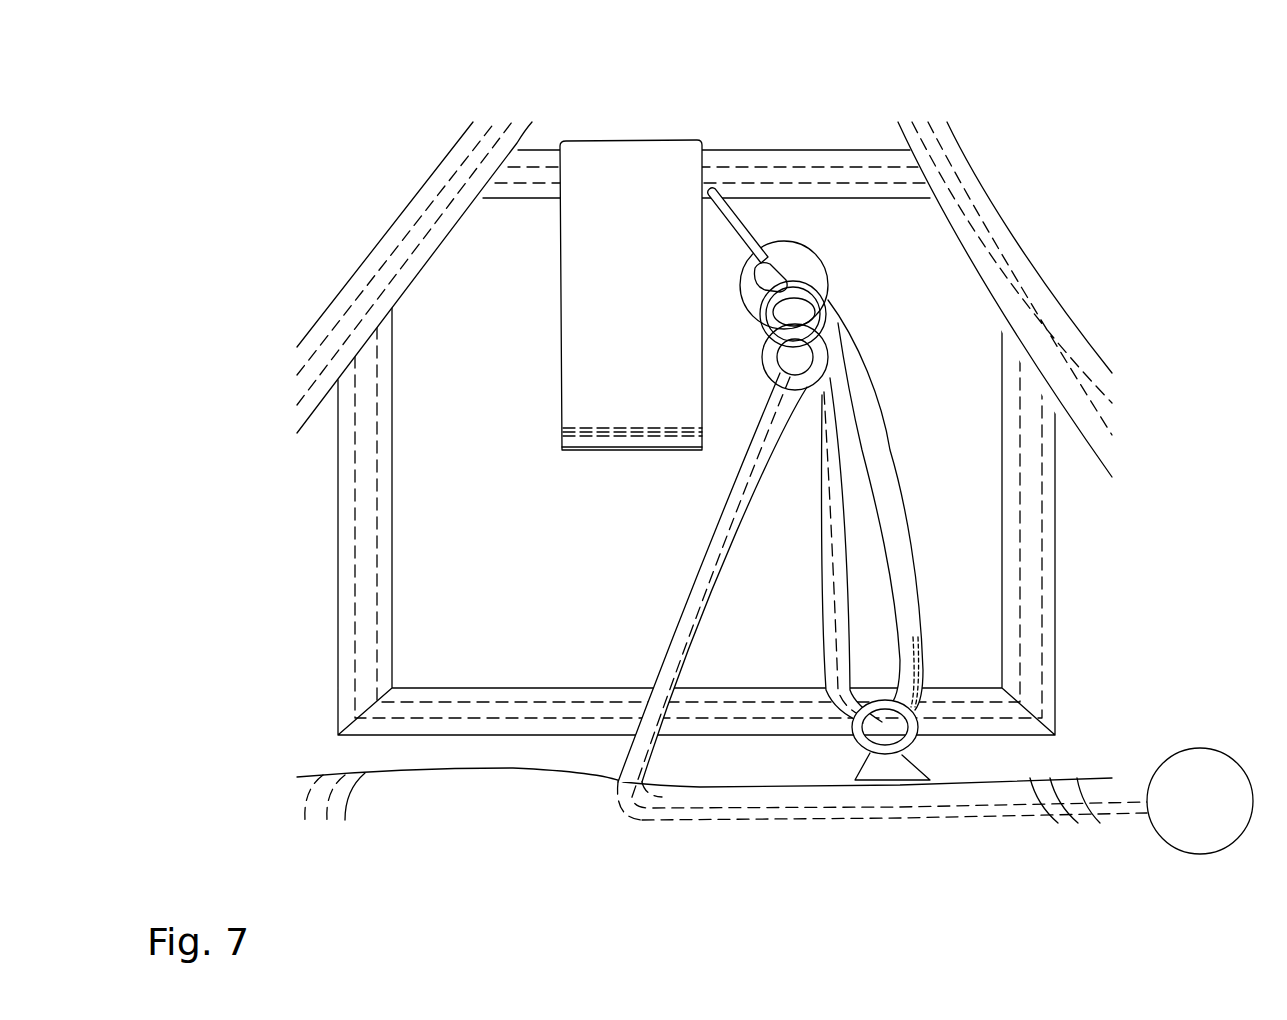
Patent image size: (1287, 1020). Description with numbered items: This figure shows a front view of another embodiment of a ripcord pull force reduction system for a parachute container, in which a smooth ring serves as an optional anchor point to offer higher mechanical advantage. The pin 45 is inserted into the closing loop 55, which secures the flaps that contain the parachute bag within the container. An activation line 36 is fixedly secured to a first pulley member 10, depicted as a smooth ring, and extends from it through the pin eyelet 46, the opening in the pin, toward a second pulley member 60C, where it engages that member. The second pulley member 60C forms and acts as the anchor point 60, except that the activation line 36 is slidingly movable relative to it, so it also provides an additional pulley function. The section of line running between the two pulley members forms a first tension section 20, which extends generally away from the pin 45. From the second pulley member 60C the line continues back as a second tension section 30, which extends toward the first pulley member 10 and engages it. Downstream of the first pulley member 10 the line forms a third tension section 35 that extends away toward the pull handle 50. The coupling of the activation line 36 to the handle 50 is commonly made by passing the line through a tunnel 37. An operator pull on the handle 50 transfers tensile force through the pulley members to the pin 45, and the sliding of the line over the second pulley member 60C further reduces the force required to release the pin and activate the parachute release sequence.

The first pulley member 10 is at (832, 350).
The first tension section 20 is at (907, 557).
The second tension section 30 is at (827, 512).
The third tension section 35 is at (660, 652).
The activation line 36 is at (695, 565).
The tunnel 37 is at (700, 817).
The pin 45 is at (823, 312).
The pin eyelet 46 is at (800, 307).
The pull handle 50 is at (1207, 747).
The closing loop 55 is at (773, 267).
The anchor point 60 is at (900, 765).
The second pulley member 60C is at (918, 746).